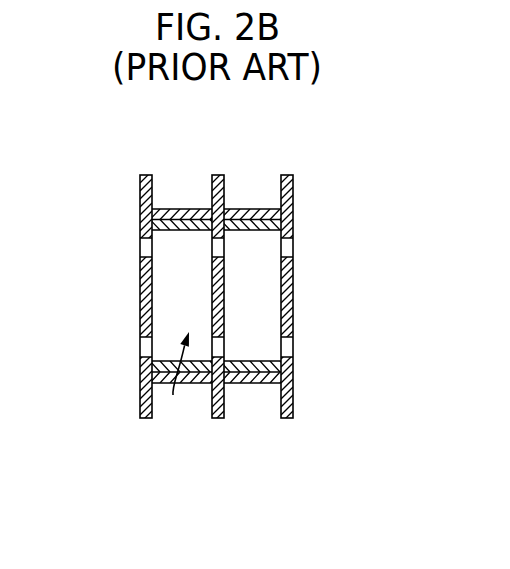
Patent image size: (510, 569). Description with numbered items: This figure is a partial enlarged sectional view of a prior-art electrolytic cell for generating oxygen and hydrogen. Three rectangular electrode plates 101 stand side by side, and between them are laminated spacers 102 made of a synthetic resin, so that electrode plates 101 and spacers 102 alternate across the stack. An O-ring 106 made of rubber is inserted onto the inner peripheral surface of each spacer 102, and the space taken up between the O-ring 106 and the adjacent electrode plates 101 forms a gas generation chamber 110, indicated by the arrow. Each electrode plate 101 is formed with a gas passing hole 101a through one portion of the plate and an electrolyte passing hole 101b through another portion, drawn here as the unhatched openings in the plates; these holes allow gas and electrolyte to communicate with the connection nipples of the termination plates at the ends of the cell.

The electrode plate 101 is at (143, 297).
The gas passing hole 101a is at (290, 248).
The electrolyte passing hole 101b is at (287, 345).
The spacer 102 is at (253, 218).
The O-ring 106 is at (245, 370).
The gas generation chamber 110 is at (173, 395).